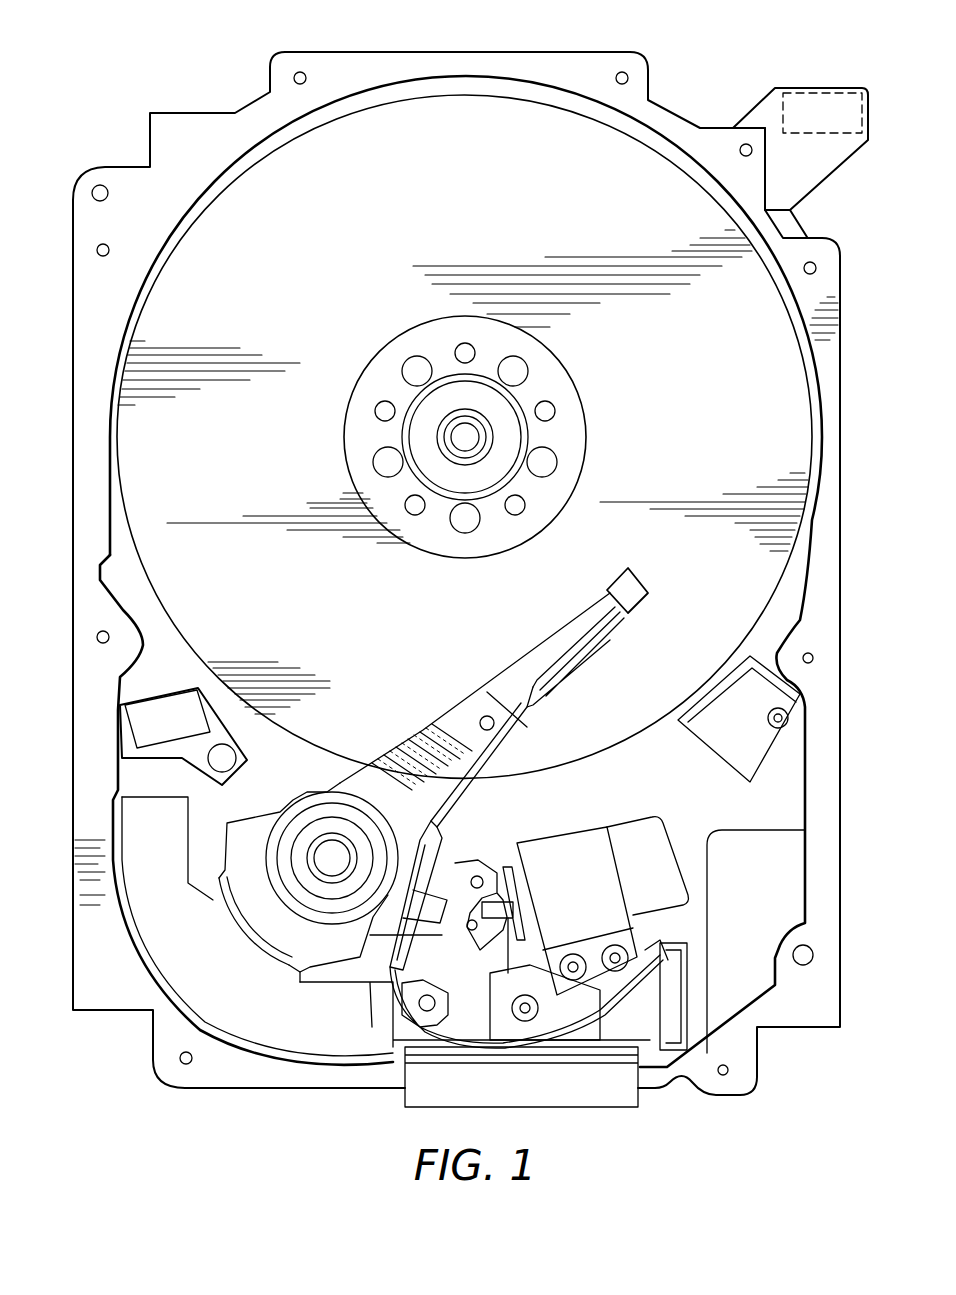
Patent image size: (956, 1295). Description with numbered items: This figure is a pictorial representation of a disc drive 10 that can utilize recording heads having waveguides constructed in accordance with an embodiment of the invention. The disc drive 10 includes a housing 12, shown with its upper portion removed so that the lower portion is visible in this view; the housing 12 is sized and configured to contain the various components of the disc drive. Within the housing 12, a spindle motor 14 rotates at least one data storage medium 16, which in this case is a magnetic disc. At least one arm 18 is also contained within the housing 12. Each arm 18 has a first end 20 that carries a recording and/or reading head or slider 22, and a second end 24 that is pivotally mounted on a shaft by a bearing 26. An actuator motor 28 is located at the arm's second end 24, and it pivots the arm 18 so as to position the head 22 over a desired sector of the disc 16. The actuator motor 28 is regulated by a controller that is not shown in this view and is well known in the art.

The disc drive 10 is at (128, 104).
The housing 12 is at (599, 66).
The spindle motor 14 is at (460, 428).
The data storage medium 16 is at (375, 231).
The arm 18 is at (449, 740).
The first end 20 is at (572, 622).
The head 22 is at (640, 578).
The second end 24 is at (358, 795).
The bearing 26 is at (323, 860).
The actuator motor 28 is at (221, 983).